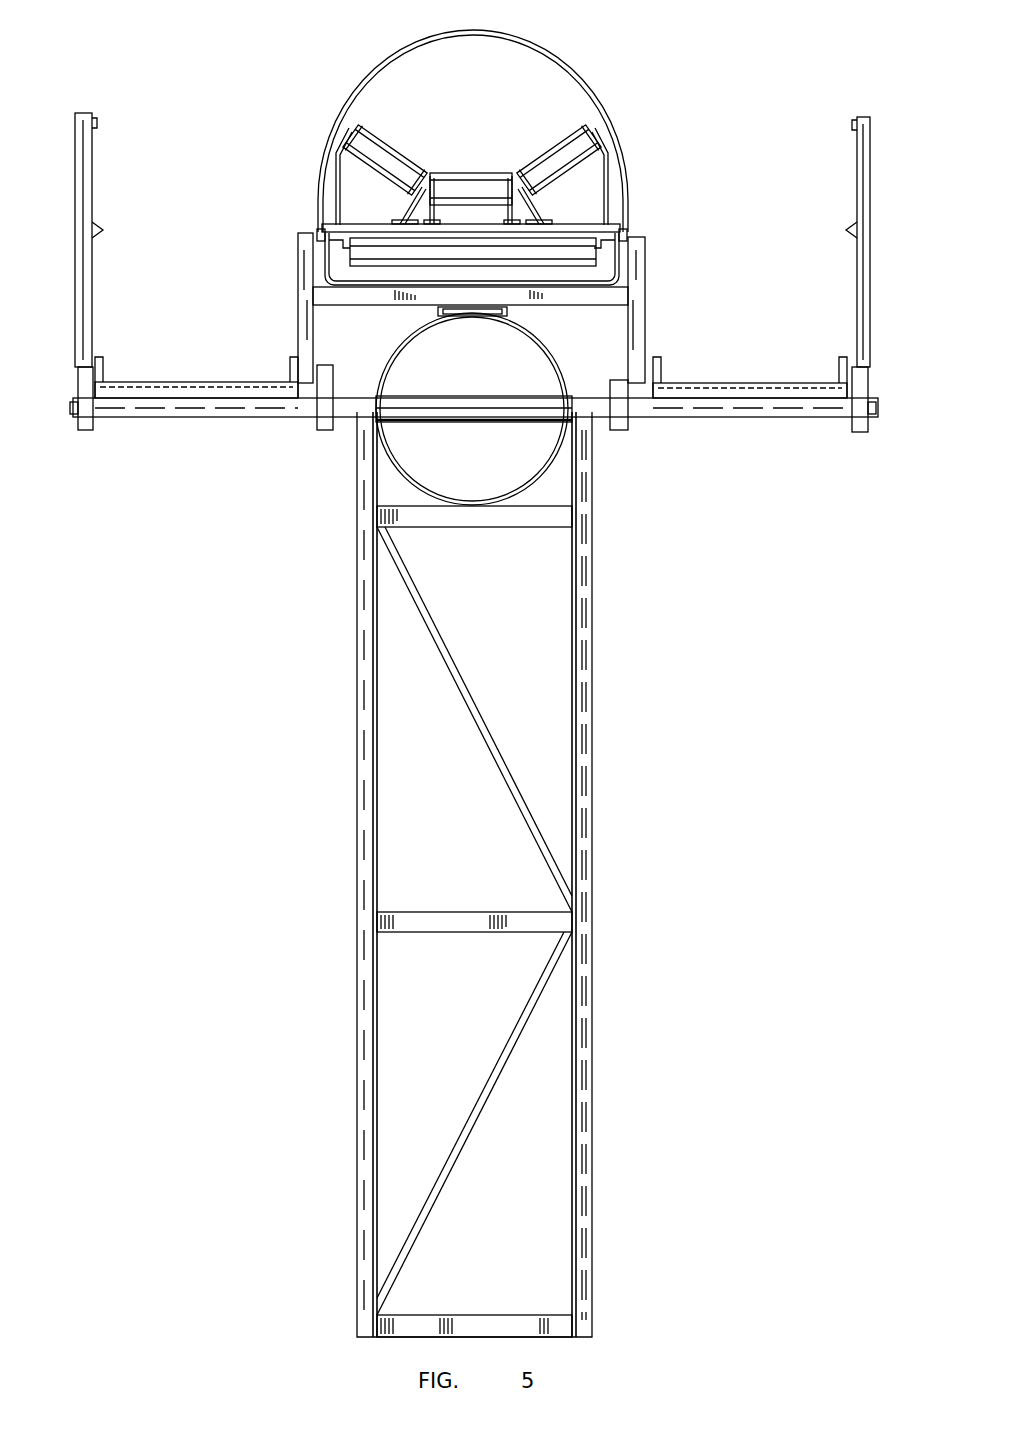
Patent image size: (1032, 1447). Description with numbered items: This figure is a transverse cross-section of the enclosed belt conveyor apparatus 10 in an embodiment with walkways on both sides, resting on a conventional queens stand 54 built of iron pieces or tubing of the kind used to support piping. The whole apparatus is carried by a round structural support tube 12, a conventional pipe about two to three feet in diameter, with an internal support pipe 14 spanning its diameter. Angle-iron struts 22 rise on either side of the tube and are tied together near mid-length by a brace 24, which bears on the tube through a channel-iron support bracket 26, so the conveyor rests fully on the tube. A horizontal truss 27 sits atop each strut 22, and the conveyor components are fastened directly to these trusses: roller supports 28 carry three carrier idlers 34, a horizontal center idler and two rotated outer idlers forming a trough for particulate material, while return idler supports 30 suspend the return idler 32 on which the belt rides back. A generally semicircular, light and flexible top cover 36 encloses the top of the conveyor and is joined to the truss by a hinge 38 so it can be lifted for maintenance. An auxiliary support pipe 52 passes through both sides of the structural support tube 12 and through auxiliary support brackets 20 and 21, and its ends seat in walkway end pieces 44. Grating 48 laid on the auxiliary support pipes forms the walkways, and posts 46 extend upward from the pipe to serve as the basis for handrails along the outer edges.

The apparatus 10 is at (341, 77).
The structural support tube 12 is at (395, 356).
The internal support pipe 14 is at (444, 406).
The auxiliary support bracket 20 is at (620, 425).
The auxiliary support bracket 21 is at (326, 418).
The struts 22 is at (300, 299).
The brace 24 is at (392, 293).
The support bracket 26 is at (508, 311).
The horizontal truss 27 is at (318, 234).
The roller supports 28 is at (337, 186).
The return idler supports 30 is at (330, 240).
The return idler 32 is at (473, 252).
The carrier idlers 34 is at (374, 150).
The top cover 36 is at (593, 92).
The hinge 38 is at (320, 227).
The walkway end piece 44 is at (86, 428).
The post 46 is at (78, 194).
The grating 48 is at (170, 384).
The auxiliary support pipe 52 is at (232, 412).
The queens stand 54 is at (612, 743).